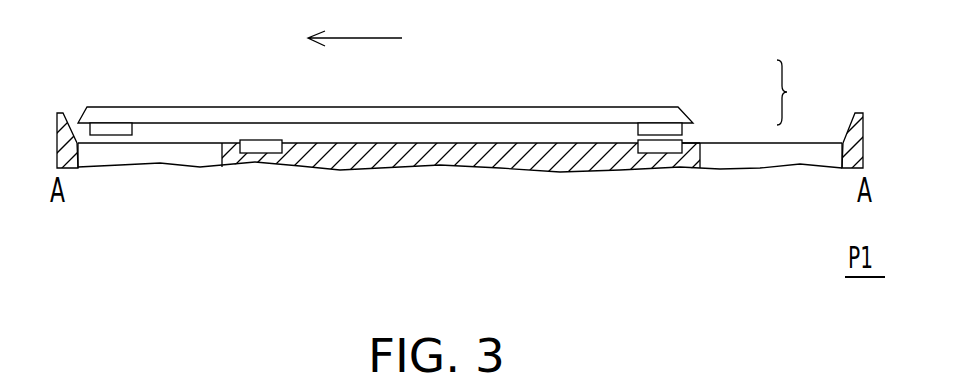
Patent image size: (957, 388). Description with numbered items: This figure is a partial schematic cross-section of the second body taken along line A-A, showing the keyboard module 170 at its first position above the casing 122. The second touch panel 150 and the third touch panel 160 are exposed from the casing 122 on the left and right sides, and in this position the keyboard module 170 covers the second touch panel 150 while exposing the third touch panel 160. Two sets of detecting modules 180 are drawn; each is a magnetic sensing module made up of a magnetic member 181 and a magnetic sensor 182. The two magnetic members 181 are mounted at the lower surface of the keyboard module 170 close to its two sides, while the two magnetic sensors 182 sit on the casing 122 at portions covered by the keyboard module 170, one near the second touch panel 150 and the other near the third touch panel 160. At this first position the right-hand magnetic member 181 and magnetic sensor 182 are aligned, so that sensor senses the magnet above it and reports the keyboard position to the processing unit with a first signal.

The casing 122 is at (405, 153).
The second touch panel 150 is at (157, 160).
The third touch panel 160 is at (767, 160).
The keyboard module 170 is at (468, 113).
The detecting module 180 is at (805, 92).
The magnetic member 181 is at (118, 128).
The magnetic sensor 182 is at (258, 145).